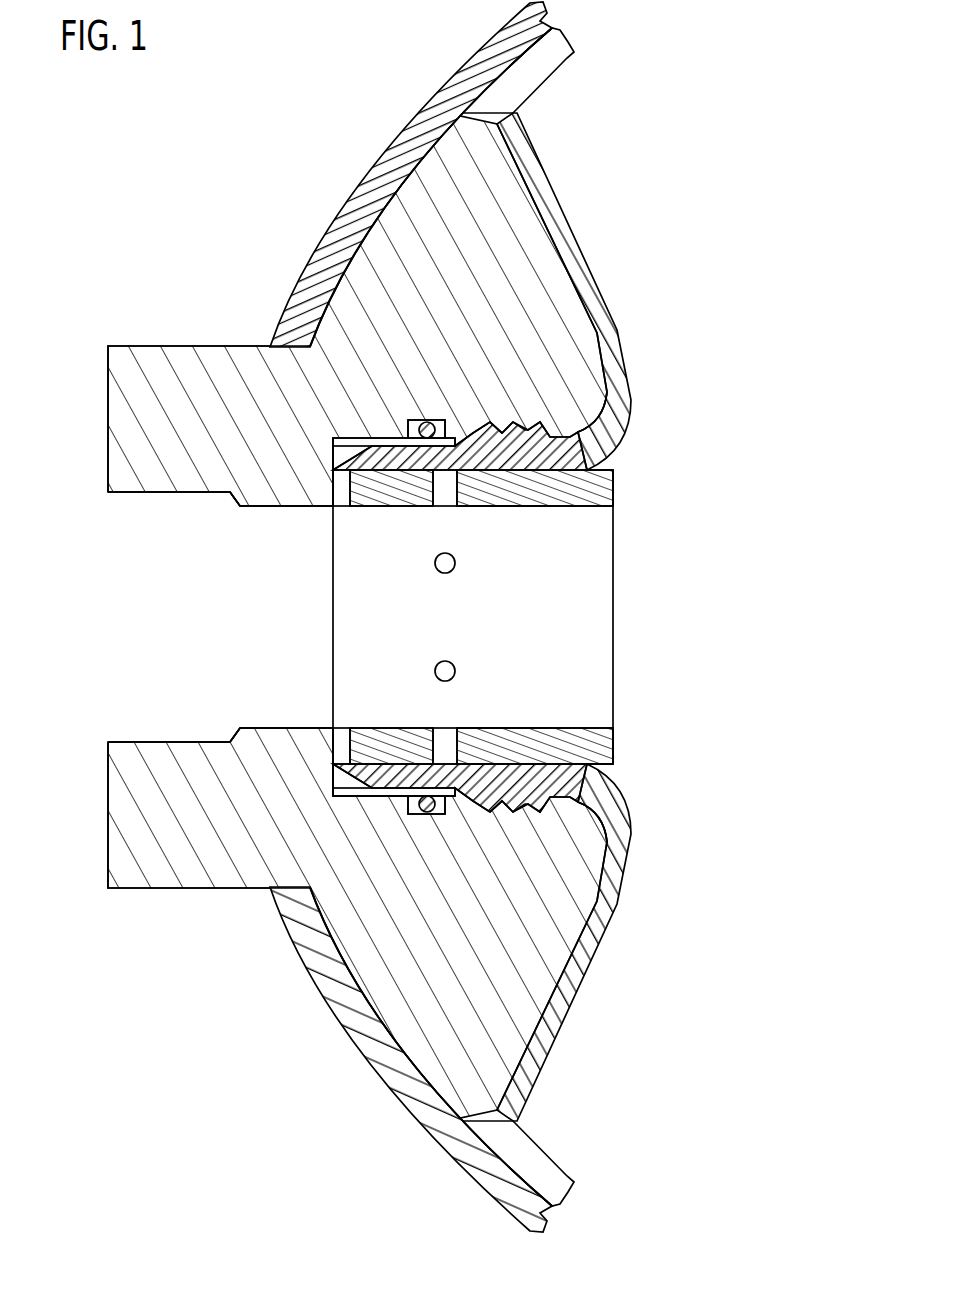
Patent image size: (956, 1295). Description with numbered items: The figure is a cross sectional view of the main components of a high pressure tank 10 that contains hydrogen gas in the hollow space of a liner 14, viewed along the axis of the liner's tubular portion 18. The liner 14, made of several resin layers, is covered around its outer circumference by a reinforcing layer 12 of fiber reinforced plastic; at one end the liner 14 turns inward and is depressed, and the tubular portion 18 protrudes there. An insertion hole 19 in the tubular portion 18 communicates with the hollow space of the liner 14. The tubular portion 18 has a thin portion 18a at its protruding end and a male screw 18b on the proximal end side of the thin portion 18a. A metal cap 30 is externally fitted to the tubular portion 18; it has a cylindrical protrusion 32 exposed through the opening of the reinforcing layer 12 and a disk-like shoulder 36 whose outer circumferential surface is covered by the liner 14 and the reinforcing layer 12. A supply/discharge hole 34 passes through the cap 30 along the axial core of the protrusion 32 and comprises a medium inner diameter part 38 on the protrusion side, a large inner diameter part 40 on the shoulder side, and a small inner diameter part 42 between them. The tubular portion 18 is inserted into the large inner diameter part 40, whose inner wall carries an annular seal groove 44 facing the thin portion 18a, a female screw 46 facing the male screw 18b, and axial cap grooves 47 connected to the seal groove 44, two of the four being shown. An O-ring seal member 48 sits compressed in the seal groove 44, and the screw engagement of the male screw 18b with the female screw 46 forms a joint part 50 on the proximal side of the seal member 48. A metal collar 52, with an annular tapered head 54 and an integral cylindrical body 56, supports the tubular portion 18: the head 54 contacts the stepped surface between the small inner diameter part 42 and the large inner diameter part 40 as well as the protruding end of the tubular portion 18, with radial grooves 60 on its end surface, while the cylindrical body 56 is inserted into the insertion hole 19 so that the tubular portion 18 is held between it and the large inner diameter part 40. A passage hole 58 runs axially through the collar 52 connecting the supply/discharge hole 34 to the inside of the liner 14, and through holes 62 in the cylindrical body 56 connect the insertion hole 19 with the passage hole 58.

The high pressure tank 10 is at (178, 93).
The reinforcing layer 12 is at (532, 20).
The liner 14 is at (553, 45).
The tubular portion 18 is at (511, 605).
The thin portion 18a is at (385, 450).
The male screw 18b is at (506, 440).
The insertion hole 19 is at (556, 489).
The cap 30 is at (357, 617).
The protrusion 32 is at (179, 360).
The supply/discharge hole 34 is at (281, 644).
The shoulder 36 is at (330, 336).
The medium inner diameter part 38 is at (216, 741).
The large inner diameter part 40 is at (394, 731).
The small inner diameter part 42 is at (280, 727).
The seal groove 44 is at (414, 448).
The female screw 46 is at (518, 452).
The cap groove 47 is at (378, 440).
The seal member 48 is at (466, 470).
The joint part 50 is at (519, 388).
The collar 52 is at (498, 608).
The head 54 is at (394, 617).
The cylindrical body 56 is at (579, 497).
The passage hole 58 is at (558, 726).
The radial groove 60 is at (355, 486).
The through hole 62 is at (452, 487).